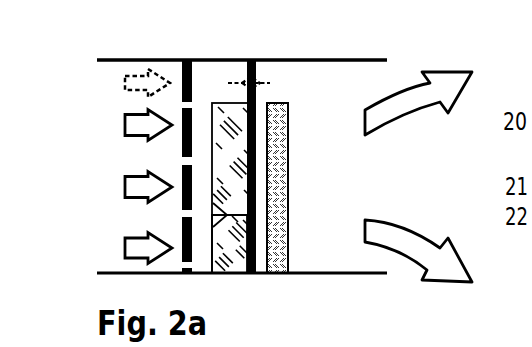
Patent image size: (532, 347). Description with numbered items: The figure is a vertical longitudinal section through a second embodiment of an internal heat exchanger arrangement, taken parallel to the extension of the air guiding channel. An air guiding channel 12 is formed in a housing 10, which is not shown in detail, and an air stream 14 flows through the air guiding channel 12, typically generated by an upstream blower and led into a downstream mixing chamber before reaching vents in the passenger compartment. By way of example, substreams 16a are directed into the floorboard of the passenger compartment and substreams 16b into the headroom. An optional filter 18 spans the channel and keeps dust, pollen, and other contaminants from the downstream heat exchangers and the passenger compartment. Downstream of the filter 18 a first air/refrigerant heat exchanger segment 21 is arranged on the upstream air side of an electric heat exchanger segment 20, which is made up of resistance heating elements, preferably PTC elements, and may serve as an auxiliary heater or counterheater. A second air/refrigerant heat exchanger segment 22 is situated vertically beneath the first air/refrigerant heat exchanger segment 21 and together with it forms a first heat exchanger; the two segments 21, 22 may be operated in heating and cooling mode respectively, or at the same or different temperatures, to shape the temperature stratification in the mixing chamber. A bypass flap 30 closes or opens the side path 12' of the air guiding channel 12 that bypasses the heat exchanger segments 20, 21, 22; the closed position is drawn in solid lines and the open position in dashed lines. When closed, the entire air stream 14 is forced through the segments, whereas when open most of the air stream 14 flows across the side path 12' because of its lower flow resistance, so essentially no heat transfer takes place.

The housing 10 is at (163, 59).
The air guiding channel 12 is at (298, 141).
The side path 12' is at (227, 56).
The air stream 14 is at (147, 247).
The substreams directed into the floorboard 16a is at (408, 247).
The substreams directed into the headroom 16b is at (408, 107).
The filter 18 is at (187, 111).
The electric heat exchanger segment 20 is at (277, 140).
The first air/refrigerant heat exchanger segment 21 is at (225, 175).
The second air/refrigerant heat exchanger segment 22 is at (233, 250).
The bypass flap 30 is at (251, 79).